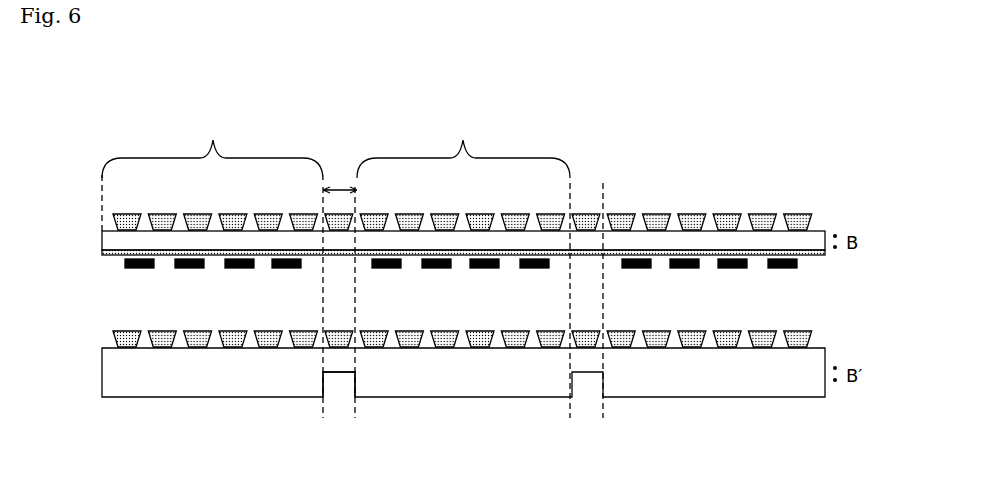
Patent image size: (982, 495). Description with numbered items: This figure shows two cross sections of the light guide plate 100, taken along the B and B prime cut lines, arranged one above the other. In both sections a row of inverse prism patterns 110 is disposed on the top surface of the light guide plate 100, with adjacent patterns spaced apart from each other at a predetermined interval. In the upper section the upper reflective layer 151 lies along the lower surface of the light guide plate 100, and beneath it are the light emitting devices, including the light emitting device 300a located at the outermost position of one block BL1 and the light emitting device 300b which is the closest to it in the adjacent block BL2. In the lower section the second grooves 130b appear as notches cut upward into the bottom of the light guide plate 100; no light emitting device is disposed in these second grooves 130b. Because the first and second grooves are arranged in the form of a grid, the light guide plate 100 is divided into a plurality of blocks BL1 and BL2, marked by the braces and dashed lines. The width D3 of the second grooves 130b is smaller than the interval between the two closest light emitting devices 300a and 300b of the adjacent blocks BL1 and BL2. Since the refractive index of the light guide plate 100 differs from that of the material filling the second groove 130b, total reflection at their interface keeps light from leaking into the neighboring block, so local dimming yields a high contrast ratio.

The light guide plate 100 is at (102, 240).
The inverse prism pattern 110 is at (113, 222).
The upper reflective layer 151 is at (103, 256).
The light emitting device 300a is at (287, 268).
The light emitting device 300b is at (388, 268).
The second groove 130b is at (347, 389).
The block BL1 is at (212, 148).
The block BL2 is at (463, 147).
The width of second grooves D3 is at (340, 180).